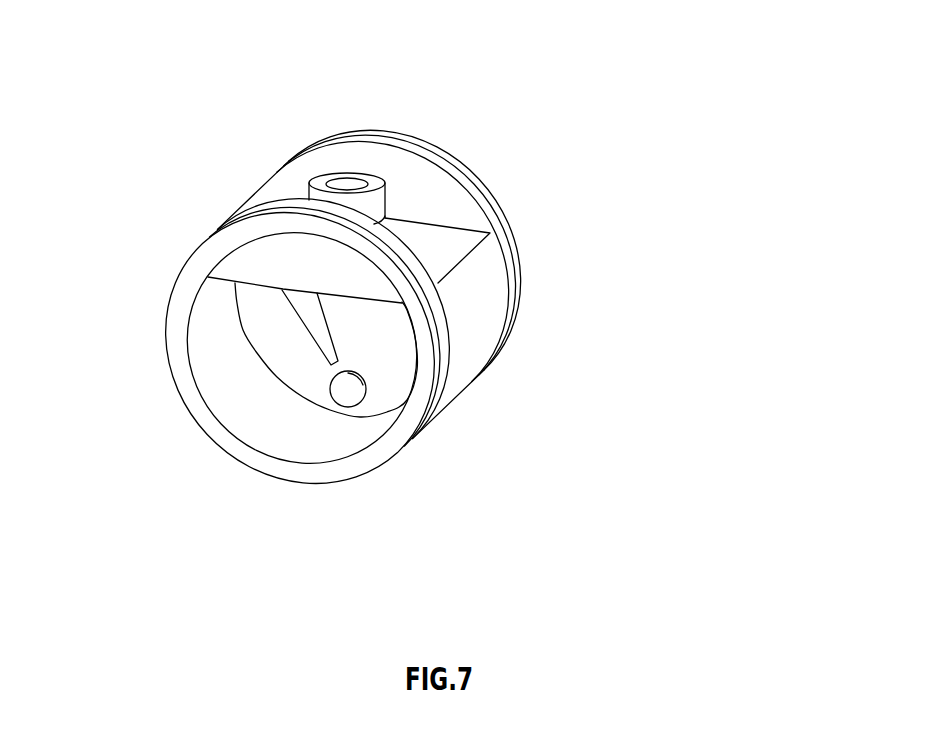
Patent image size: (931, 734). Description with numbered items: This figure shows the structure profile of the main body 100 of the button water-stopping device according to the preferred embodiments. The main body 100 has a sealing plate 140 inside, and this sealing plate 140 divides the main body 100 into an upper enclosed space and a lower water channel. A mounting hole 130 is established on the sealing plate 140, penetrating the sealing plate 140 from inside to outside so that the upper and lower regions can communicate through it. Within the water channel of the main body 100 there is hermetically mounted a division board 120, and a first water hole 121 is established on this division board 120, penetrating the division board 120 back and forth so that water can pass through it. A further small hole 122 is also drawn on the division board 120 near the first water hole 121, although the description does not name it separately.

The main body 100 is at (437, 291).
The division board 120 is at (280, 365).
The first water hole 121 is at (307, 313).
The small hole 122 is at (345, 398).
The mounting hole 130 is at (347, 185).
The sealing plate 140 is at (442, 247).